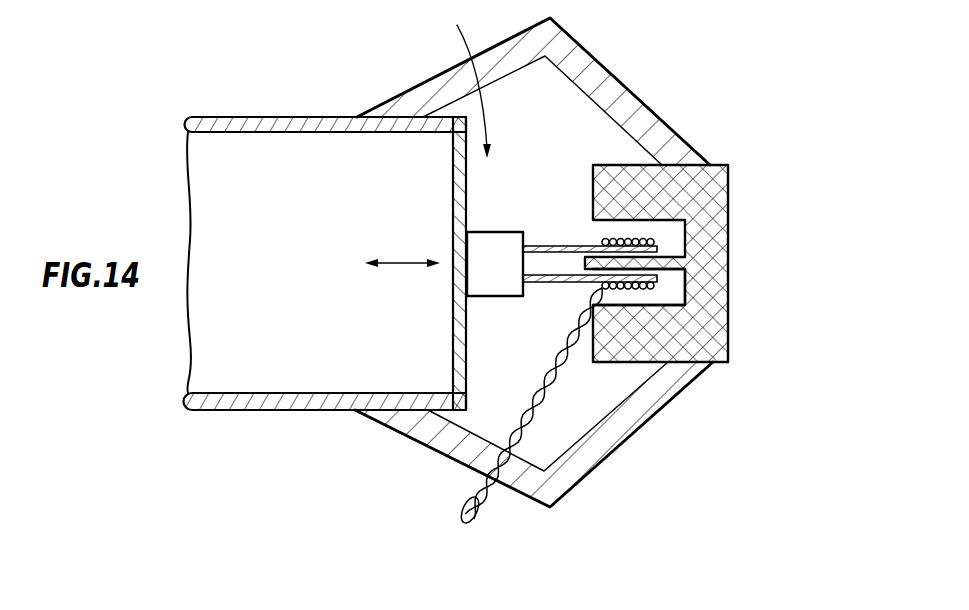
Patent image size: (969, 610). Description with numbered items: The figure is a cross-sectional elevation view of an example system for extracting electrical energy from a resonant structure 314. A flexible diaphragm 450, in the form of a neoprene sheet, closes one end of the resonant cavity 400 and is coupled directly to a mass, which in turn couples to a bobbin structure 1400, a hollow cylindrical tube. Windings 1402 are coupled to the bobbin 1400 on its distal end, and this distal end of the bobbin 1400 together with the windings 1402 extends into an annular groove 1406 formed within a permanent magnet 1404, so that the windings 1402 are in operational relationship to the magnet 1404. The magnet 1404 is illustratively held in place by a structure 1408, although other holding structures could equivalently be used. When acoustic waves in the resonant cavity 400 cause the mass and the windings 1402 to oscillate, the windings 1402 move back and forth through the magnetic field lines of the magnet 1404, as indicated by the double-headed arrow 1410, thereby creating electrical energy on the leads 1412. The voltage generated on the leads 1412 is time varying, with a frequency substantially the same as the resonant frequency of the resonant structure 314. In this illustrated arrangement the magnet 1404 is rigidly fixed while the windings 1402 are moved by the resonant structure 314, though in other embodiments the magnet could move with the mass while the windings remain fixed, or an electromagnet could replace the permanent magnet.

The resonant structure 314 is at (452, 79).
The resonant cavity 400 is at (253, 191).
The flexible diaphragm 450 is at (453, 193).
The bobbin structure 1400 is at (560, 282).
The windings 1402 is at (627, 240).
The permanent magnet 1404 is at (729, 232).
The annular groove 1406 is at (672, 288).
The structure 1408 is at (612, 74).
The double-headed arrow 1410 is at (413, 264).
The leads 1412 is at (463, 500).